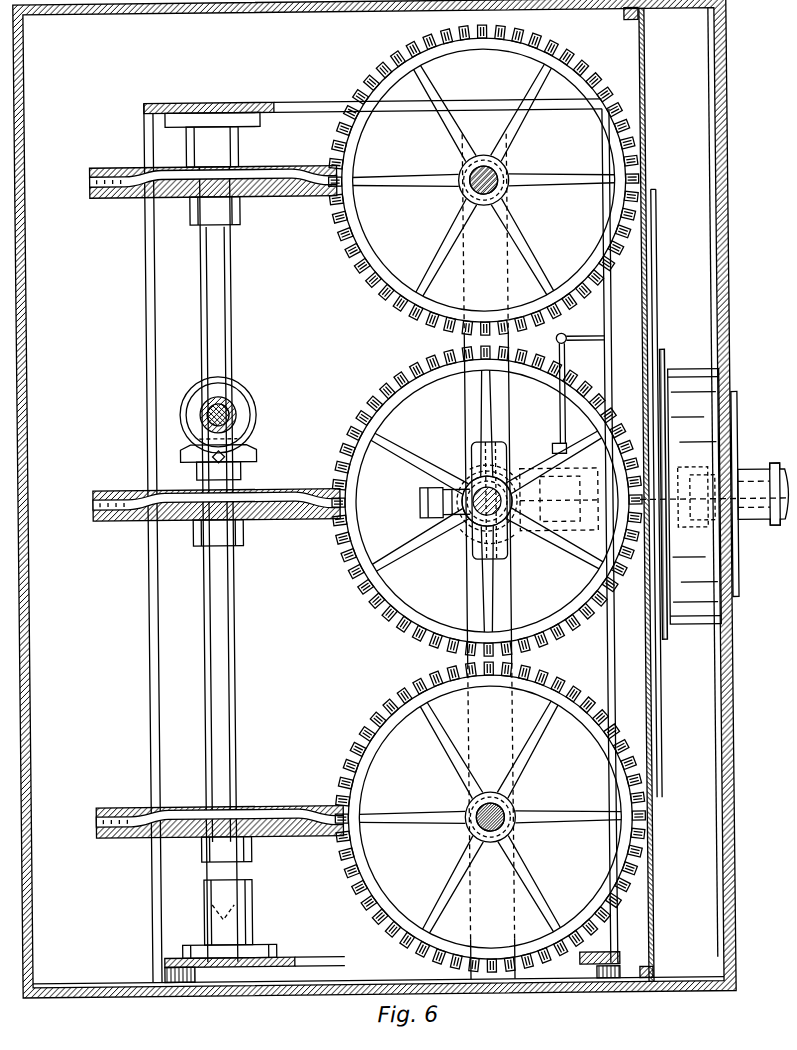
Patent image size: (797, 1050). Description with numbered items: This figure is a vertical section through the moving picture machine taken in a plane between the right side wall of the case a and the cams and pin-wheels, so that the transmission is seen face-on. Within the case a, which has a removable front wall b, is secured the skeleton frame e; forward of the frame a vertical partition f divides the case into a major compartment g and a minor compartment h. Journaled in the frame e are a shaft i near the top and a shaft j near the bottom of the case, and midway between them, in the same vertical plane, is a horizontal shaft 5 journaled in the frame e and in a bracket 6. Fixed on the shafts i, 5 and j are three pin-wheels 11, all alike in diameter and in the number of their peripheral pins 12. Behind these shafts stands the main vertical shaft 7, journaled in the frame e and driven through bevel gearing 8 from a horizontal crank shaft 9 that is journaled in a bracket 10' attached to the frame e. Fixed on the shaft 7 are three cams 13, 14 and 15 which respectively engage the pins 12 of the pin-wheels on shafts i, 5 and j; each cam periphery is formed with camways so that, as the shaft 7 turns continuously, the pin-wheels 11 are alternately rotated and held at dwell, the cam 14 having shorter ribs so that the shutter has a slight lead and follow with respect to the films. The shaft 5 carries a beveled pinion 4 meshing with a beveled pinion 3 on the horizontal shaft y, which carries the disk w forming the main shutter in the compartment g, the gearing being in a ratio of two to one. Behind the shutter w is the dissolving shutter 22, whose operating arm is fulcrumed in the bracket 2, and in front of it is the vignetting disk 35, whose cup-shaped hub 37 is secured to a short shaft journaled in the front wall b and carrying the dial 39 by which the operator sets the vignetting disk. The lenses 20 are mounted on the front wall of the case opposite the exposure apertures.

The bracket 2 is at (470, 448).
The beveled pinion 3 is at (430, 493).
The beveled pinion 4 is at (515, 458).
The horizontal shaft 5 is at (470, 538).
The bracket 6 is at (570, 528).
The vertical shaft 7 is at (233, 595).
The bevel gearing 8 is at (195, 432).
The horizontal shaft 9 is at (238, 415).
The bracket 10' is at (244, 428).
The pin-wheels 11 is at (402, 916).
The peripheral pins 12 is at (385, 920).
The cam 13 is at (280, 196).
The cam 14 is at (290, 518).
The cam 15 is at (302, 833).
The lenses 20 is at (770, 528).
The dissolving shutter 22 is at (654, 703).
The vignetting disk 35 is at (668, 705).
The cup-shaped hub 37 is at (695, 497).
The dial 39 is at (738, 578).
The case a is at (258, 994).
The front wall b is at (731, 820).
The skeleton frame e is at (148, 650).
The vertical partition f is at (650, 875).
The major compartment g is at (685, 918).
The minor compartment h is at (336, 932).
The shaft i is at (498, 188).
The shaft j is at (505, 822).
The disk w is at (660, 293).
The horizontal shaft y is at (775, 470).